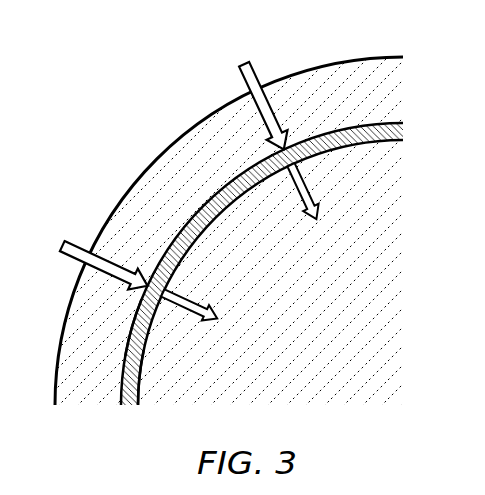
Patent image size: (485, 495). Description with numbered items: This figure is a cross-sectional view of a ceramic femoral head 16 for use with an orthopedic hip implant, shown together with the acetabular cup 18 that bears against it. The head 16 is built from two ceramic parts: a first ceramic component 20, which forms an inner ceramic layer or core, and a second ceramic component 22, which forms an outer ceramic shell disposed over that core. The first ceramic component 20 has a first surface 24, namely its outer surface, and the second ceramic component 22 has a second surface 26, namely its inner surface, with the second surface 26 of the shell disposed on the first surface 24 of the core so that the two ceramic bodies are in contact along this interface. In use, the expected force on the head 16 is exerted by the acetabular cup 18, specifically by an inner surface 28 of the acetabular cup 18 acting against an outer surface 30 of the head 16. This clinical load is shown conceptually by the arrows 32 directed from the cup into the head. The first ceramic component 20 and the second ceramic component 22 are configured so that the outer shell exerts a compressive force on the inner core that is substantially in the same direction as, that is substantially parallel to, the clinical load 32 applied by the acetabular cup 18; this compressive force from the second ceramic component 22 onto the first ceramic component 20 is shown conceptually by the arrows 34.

The head 16 is at (95, 147).
The acetabular cup 18 is at (195, 153).
The first ceramic component 20 is at (384, 245).
The second ceramic component 22 is at (213, 208).
The first surface 24 is at (337, 141).
The second surface 26 is at (142, 384).
The inner surface 28 is at (128, 352).
The outer surface 30 is at (377, 118).
The arrows 32 is at (263, 80).
The arrows 34 is at (307, 183).